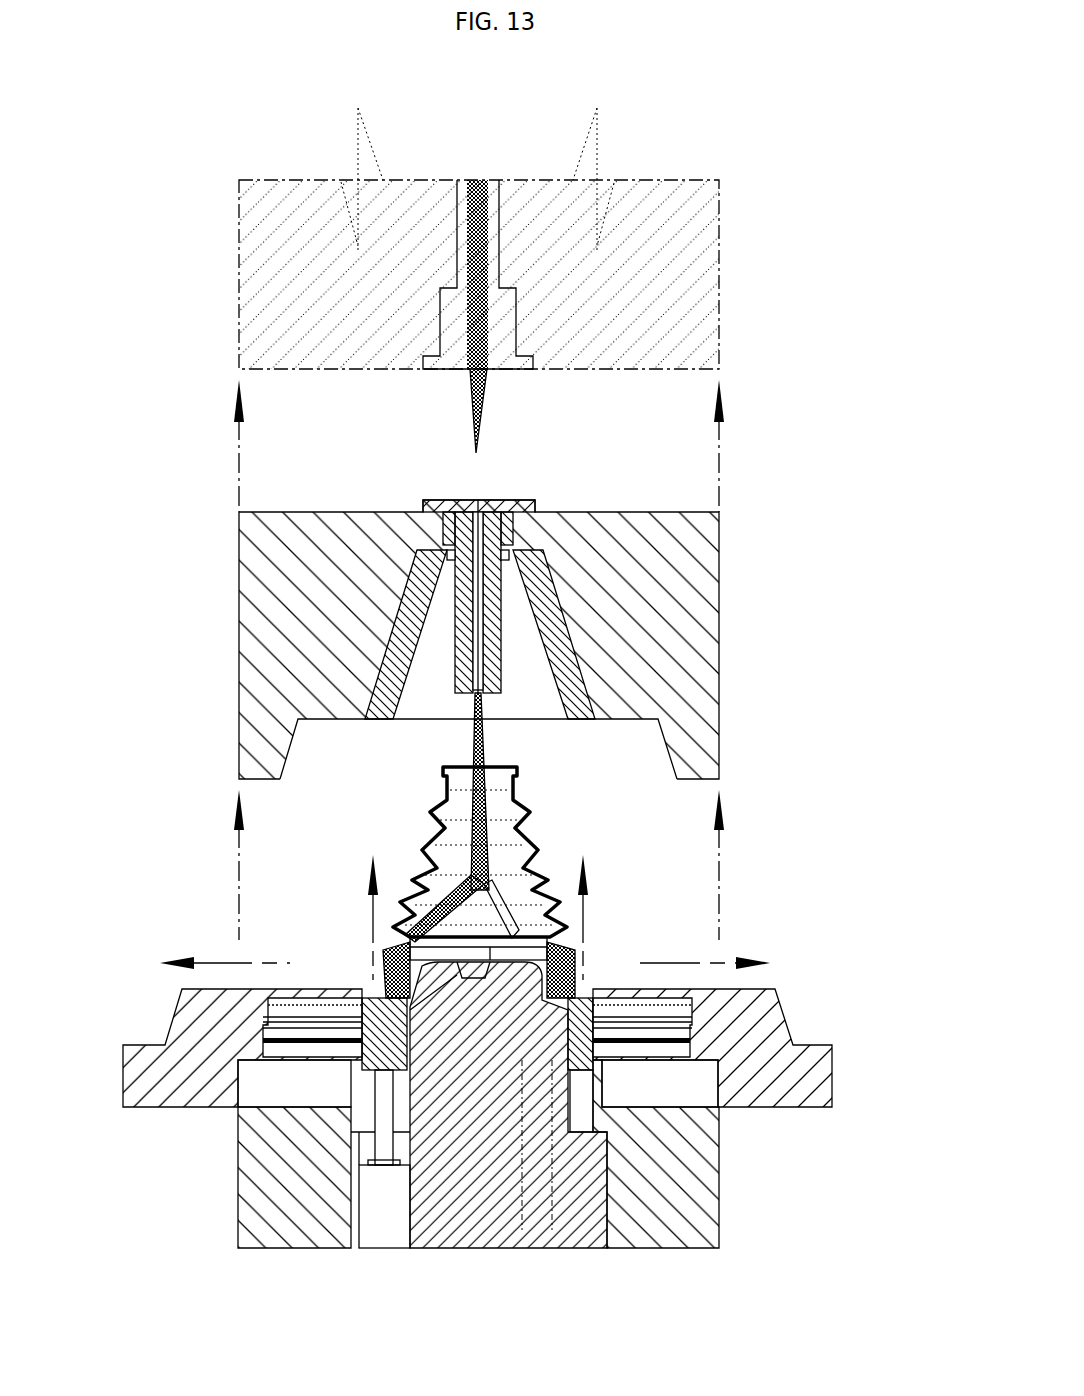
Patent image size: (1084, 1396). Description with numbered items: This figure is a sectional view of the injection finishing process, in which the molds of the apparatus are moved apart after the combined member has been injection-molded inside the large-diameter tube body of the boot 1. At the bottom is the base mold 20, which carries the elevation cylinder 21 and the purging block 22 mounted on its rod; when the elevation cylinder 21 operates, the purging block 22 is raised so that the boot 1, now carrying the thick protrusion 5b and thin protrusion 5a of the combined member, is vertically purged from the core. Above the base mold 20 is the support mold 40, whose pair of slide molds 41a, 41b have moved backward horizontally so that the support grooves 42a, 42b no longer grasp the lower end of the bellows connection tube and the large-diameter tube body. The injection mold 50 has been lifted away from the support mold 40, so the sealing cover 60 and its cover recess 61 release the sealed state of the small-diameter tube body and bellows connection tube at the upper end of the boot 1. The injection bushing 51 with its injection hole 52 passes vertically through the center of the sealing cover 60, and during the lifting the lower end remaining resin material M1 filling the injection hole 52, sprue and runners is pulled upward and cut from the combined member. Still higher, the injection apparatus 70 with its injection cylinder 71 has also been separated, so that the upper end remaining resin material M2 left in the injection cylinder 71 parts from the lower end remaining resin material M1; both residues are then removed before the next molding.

The boot 1 is at (403, 843).
The thin protrusion 5a is at (578, 993).
The thick protrusion 5b is at (378, 992).
The base mold 20 is at (727, 1168).
The elevation cylinder 21 is at (403, 1210).
The purging block 22 is at (387, 1048).
The support mold 40 is at (775, 983).
The slide mold 41a is at (772, 1024).
The slide mold 41b is at (192, 1015).
The support groove 42a is at (625, 1000).
The support groove 42b is at (308, 1000).
The injection mold 50 is at (728, 636).
The injection bushing 51 is at (436, 530).
The injection hole 52 is at (478, 527).
The sealing cover 60 is at (405, 538).
The cover recess 61 is at (425, 693).
The injection apparatus 70 is at (682, 270).
The injection cylinder 71 is at (460, 212).
The lower end remaining resin material M1 is at (487, 835).
The upper end remaining resin material M2 is at (482, 388).